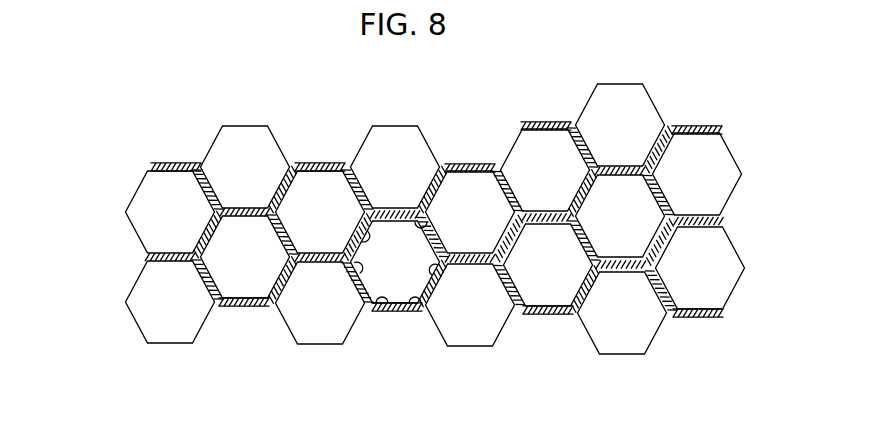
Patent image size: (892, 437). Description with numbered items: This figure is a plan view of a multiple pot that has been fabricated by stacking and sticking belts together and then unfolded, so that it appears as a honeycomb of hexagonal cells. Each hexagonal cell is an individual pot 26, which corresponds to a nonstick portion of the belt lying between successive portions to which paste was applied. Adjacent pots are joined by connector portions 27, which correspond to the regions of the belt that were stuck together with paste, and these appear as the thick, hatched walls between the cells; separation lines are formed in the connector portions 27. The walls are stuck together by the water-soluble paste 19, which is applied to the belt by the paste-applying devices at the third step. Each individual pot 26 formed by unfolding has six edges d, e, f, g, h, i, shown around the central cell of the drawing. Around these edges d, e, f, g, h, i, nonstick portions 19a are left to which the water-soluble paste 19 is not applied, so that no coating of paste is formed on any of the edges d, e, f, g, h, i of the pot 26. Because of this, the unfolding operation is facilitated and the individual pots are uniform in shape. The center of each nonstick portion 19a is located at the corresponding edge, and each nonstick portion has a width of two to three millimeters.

The water-soluble paste 19 is at (548, 313).
The nonstick portion 19a is at (348, 170).
The pot 26 is at (170, 335).
The connector portion 27 is at (247, 310).
The edge d is at (425, 229).
The edge e is at (355, 236).
The edge f is at (352, 283).
The edge g is at (383, 307).
The edge h is at (413, 307).
The edge i is at (440, 284).